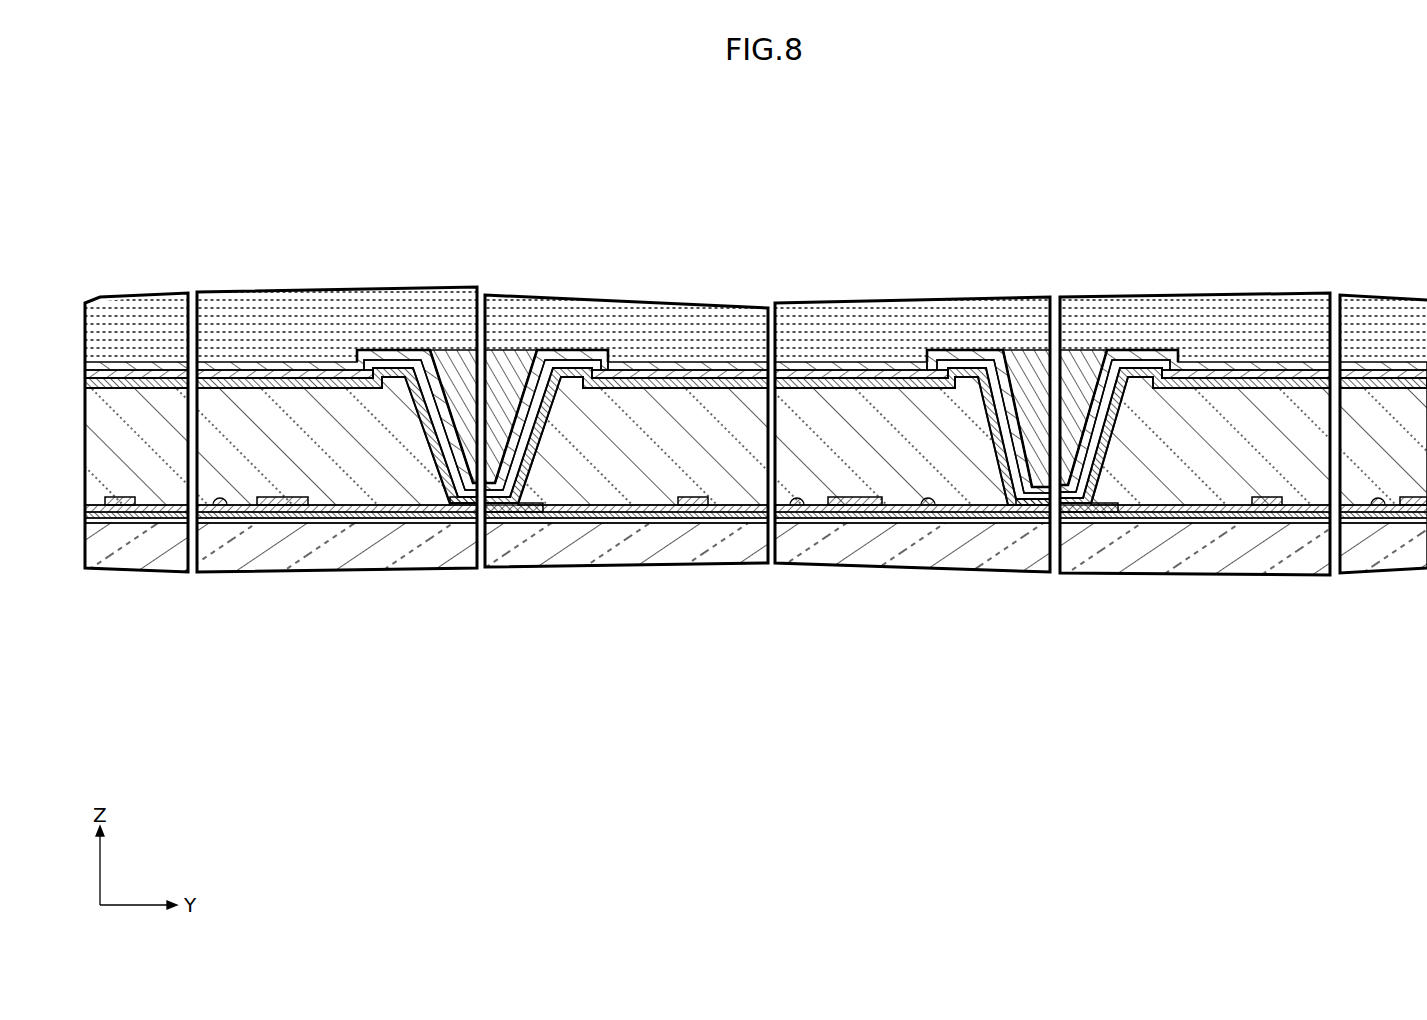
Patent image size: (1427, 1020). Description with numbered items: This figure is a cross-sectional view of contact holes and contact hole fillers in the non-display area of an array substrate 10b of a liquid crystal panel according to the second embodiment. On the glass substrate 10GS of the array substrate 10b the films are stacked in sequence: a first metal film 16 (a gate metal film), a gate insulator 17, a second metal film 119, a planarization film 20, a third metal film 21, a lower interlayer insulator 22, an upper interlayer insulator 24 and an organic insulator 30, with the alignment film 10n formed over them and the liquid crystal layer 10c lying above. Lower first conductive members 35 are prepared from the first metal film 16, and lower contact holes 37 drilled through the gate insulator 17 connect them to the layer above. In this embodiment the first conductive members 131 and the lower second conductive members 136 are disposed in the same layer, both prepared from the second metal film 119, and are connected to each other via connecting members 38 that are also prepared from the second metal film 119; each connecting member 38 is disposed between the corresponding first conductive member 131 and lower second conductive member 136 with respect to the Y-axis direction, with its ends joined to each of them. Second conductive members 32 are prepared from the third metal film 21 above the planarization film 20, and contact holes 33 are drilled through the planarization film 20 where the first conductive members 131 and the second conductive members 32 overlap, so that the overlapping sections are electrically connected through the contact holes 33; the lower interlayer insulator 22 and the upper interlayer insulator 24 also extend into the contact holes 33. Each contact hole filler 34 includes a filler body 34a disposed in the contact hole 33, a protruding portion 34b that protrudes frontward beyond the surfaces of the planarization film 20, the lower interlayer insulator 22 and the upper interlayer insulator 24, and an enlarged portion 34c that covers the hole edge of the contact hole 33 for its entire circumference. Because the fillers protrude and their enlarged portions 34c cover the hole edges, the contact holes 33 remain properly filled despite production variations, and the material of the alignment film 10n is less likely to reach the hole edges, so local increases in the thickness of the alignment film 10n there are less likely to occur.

The alignment film 10n is at (240, 362).
The liquid crystal layer 10c is at (665, 366).
The array substrate 10b is at (607, 545).
The glass substrate 10GS is at (1175, 565).
The contact hole filler 34 is at (594, 350).
The organic insulator 30 is at (793, 341).
The filler body 34a is at (497, 415).
The protruding portion 34b is at (467, 360).
The enlarged portion 34c is at (390, 350).
The upper interlayer insulator 24 is at (856, 368).
The lower interlayer insulator 22 is at (903, 375).
The contact hole 33 is at (433, 458).
The gate insulator 17 is at (372, 510).
The planarization film 20 is at (756, 526).
The lower contact hole 37 is at (246, 512).
The connecting member 38 is at (330, 505).
The lower second conductive member 136 is at (210, 518).
The second metal film 119 is at (756, 586).
The lower first conductive member 35 is at (150, 540).
The first metal film 16 is at (756, 596).
The first conductive member 131 is at (466, 505).
The second conductive member 32 is at (508, 512).
The third metal film 21 is at (801, 586).